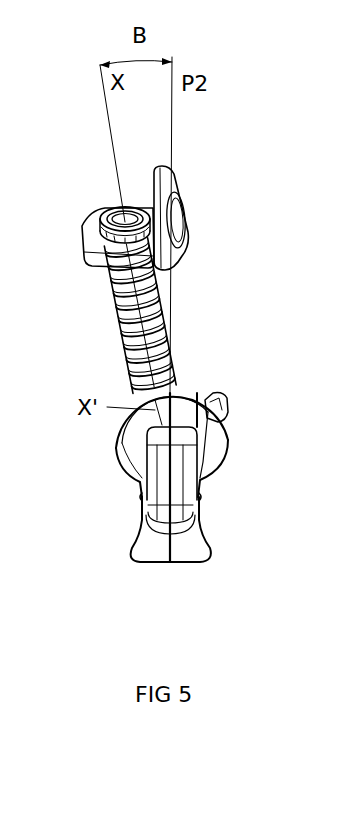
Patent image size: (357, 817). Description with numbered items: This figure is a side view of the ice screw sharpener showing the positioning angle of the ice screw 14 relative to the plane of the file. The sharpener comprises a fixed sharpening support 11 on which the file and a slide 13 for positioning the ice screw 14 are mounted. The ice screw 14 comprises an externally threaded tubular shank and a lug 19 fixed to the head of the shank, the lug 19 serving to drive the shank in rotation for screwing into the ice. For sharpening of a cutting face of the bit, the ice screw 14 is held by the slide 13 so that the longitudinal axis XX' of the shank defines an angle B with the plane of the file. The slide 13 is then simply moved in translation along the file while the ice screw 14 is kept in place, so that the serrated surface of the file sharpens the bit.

The fixed sharpening support 11 is at (153, 547).
The slide 13 is at (213, 450).
The ice screw 14 is at (172, 328).
The lug 19 is at (97, 243).